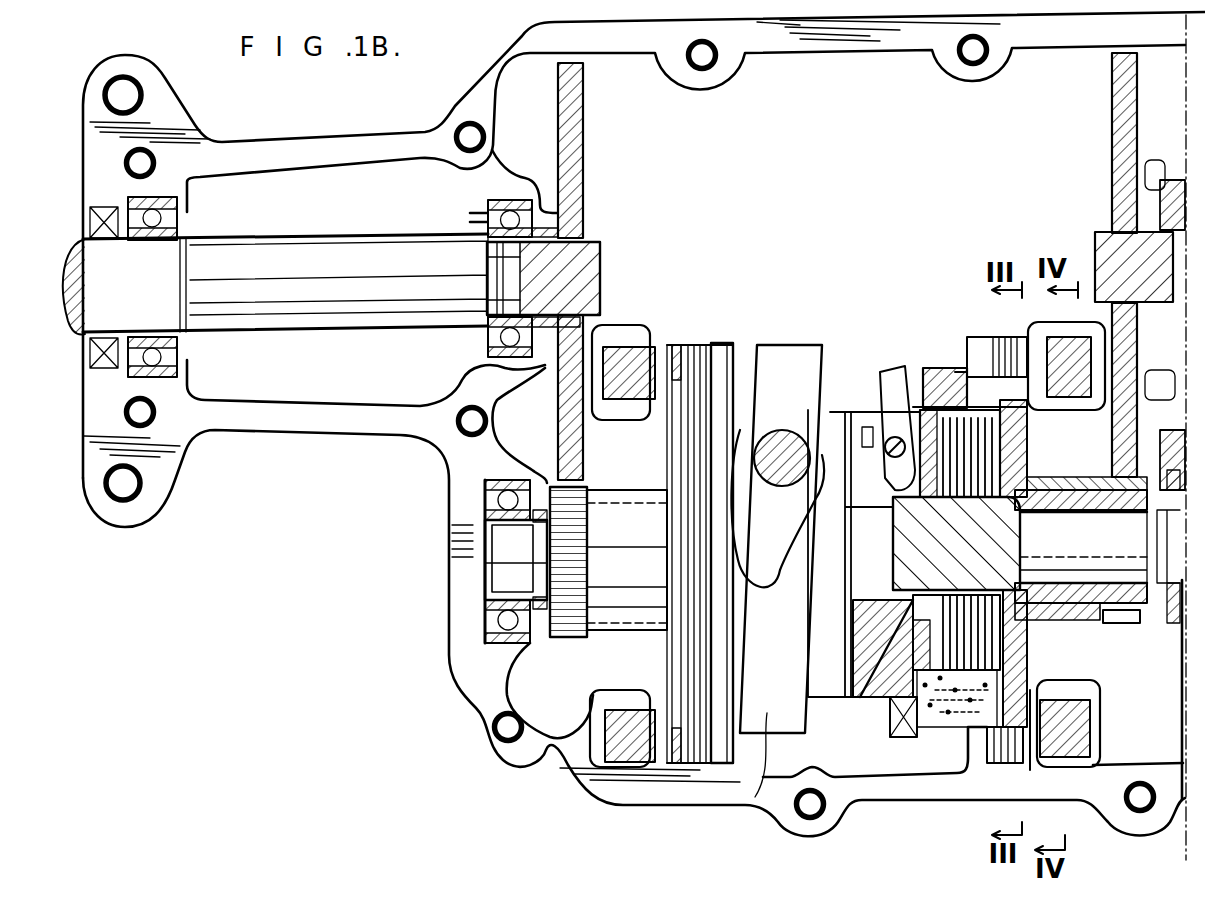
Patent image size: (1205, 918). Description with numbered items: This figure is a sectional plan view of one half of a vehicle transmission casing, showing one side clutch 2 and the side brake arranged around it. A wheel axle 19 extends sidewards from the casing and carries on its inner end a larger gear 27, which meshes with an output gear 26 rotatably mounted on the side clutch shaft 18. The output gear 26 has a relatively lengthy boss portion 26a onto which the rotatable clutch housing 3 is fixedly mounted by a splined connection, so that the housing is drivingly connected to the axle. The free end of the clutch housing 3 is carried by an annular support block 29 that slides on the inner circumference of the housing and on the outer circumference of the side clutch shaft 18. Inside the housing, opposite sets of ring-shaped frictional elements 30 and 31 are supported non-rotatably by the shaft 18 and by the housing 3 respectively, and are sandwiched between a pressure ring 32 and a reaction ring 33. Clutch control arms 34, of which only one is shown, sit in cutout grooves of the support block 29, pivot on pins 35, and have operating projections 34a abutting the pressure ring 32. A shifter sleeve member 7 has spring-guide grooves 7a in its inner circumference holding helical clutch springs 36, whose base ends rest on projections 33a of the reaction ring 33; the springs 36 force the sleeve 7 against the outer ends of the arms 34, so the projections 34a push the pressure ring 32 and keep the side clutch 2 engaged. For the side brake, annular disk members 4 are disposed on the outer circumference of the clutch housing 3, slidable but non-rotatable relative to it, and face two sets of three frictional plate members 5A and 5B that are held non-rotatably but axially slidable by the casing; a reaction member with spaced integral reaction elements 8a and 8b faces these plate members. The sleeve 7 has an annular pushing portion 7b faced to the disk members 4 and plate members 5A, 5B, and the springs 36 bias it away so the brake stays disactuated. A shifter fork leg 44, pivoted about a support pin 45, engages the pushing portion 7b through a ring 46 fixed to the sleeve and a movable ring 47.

The side clutch 2 is at (1027, 650).
The clutch housing 3 is at (1027, 440).
The annular disk member 4 is at (693, 520).
The frictional plate members 5A is at (698, 345).
The frictional plate members 5B is at (695, 765).
The shifter sleeve member 7 is at (925, 372).
The spring-guide grooves 7a is at (940, 760).
The annular pushing portion 7b is at (714, 765).
The reaction element 8a is at (633, 355).
The reaction element 8b is at (620, 765).
The side clutch shaft 18 is at (1122, 623).
The wheel axle 19 is at (400, 250).
The output gear 26 is at (565, 640).
The boss portion 26a is at (632, 625).
The larger gear 27 is at (583, 70).
The annular support block 29 is at (893, 685).
The frictional elements 30 is at (943, 587).
The frictional elements 31 is at (960, 715).
The pressure ring 32 is at (937, 587).
The reaction ring 33 is at (1027, 470).
The projections 33a is at (1055, 712).
The clutch control arm 34 is at (892, 442).
The operating projection 34a is at (912, 505).
The pin 35 is at (893, 452).
The helical clutch spring 36 is at (915, 715).
The leg of shifter fork 44 is at (769, 580).
The support pin 45 is at (782, 437).
The ring 46 is at (670, 430).
The movable ring 47 is at (733, 345).